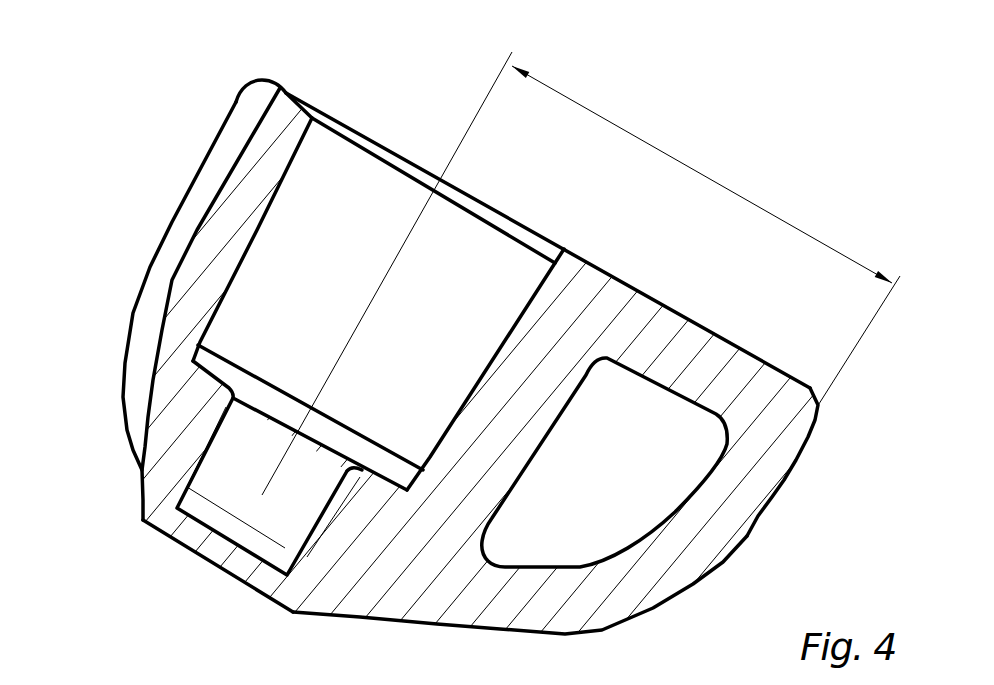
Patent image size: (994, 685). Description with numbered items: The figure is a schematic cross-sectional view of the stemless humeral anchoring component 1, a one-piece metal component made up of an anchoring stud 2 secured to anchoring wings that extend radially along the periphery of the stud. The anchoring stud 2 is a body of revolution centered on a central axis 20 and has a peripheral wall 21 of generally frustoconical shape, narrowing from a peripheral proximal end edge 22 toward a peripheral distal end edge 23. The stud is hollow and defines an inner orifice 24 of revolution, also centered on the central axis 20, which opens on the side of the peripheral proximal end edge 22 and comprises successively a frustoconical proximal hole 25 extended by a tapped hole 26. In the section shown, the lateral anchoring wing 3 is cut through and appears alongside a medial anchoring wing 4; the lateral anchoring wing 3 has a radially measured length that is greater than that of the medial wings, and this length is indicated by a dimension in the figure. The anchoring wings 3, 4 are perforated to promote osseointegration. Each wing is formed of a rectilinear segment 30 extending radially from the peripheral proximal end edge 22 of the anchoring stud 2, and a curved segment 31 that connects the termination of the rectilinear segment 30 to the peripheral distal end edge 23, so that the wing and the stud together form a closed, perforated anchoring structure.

The stemless humeral anchoring component 1 is at (108, 110).
The anchoring stud 2 is at (148, 262).
The lateral anchoring wing 3 is at (753, 577).
The medial anchoring wing 4 is at (207, 113).
The central axis 20 is at (495, 80).
The peripheral wall 21 is at (222, 232).
The peripheral proximal end edge 22 is at (141, 521).
The peripheral distal end edge 23 is at (288, 88).
The inner orifice 24 is at (347, 155).
The frustoconical proximal hole 25 is at (397, 202).
The tapped hole 26 is at (217, 485).
The rectilinear segment 30 is at (696, 340).
The curved segment 31 is at (747, 512).